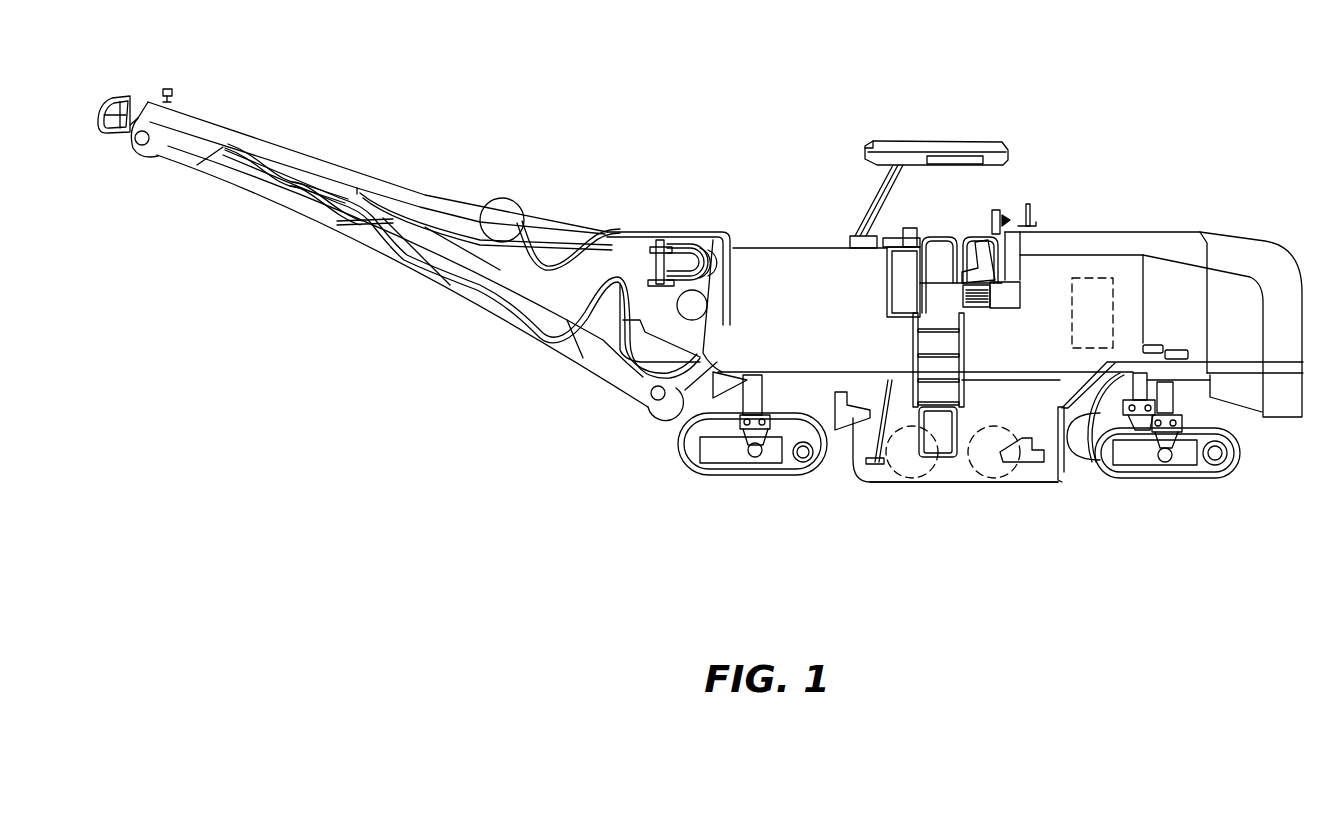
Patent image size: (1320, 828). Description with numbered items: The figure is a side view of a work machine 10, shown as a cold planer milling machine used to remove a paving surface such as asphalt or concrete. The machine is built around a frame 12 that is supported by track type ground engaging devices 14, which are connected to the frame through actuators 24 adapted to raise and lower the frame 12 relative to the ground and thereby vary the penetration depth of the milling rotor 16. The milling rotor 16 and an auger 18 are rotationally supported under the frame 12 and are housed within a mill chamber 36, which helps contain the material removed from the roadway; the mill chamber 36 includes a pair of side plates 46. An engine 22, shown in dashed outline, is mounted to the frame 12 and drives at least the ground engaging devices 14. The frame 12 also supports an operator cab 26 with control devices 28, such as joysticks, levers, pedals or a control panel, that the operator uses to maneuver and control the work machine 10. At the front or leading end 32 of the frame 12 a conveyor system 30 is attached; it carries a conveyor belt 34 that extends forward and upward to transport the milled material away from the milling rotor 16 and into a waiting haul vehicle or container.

The work machine 10 is at (1042, 108).
The frame 12 is at (718, 358).
The ground engaging devices 14 is at (770, 474).
The milling rotor 16 is at (1010, 472).
The auger 18 is at (896, 477).
The engine 22 is at (1092, 278).
The actuators 24 is at (752, 405).
The operator cab 26 is at (990, 190).
The control devices 28 is at (906, 228).
The conveyor system 30 is at (517, 193).
The leading end 32 is at (705, 215).
The conveyor belt 34 is at (234, 132).
The mill chamber 36 is at (1074, 485).
The side plates 46 is at (956, 482).